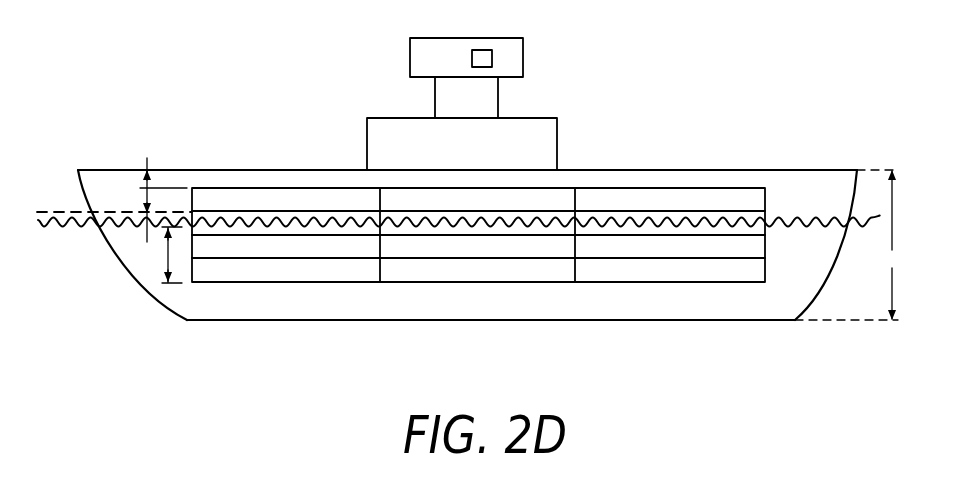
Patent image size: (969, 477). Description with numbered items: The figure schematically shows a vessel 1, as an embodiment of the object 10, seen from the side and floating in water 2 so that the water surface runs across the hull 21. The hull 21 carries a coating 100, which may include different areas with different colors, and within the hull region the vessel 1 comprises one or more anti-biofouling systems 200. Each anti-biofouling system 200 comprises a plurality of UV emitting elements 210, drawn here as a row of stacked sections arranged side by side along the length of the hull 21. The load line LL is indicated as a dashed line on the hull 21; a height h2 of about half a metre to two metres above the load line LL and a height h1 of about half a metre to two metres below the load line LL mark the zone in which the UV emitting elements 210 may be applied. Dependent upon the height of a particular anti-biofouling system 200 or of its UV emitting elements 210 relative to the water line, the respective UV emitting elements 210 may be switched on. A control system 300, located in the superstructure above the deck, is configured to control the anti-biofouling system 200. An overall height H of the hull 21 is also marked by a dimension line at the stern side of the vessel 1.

The vessel 1 is at (473, 204).
The object 10 is at (467, 204).
The hull 21 is at (818, 180).
The water 2 is at (53, 228).
The coating 100 is at (478, 247).
The anti-biofouling system 200 is at (240, 290).
The UV emitting element 210 is at (308, 272).
The control system 300 is at (492, 62).
The load line LL is at (127, 213).
The height below the load line h1 is at (167, 253).
The height above the load line h2 is at (147, 197).
The hull height H is at (848, 245).